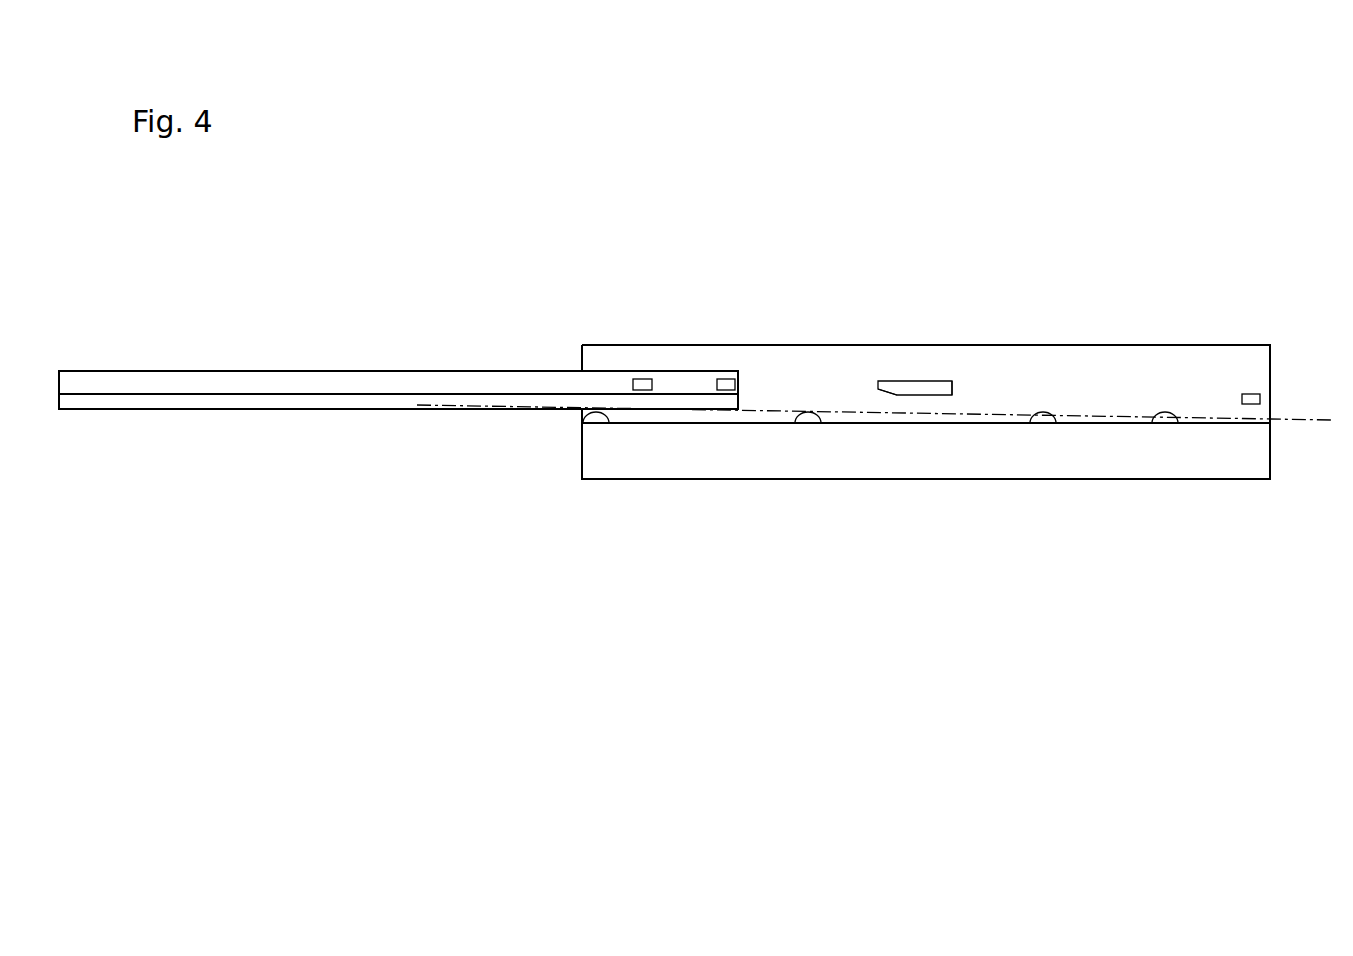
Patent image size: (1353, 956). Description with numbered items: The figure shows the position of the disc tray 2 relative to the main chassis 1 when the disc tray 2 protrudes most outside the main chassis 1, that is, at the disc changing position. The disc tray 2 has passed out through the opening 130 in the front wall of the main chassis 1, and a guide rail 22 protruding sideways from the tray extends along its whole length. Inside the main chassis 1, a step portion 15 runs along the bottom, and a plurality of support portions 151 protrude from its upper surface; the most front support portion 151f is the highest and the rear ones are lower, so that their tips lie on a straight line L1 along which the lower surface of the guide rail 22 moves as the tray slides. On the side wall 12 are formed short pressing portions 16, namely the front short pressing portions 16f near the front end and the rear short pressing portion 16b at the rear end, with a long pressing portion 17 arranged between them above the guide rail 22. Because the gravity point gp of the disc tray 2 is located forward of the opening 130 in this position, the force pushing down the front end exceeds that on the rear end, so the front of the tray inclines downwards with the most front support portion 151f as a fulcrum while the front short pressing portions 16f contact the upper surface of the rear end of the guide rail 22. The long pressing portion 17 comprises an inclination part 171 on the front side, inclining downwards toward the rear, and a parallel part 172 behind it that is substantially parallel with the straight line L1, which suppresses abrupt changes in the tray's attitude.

The main chassis 1 is at (612, 355).
The disc tray 2 is at (248, 386).
The side wall 12 is at (788, 368).
The step portion 15 is at (989, 456).
The guide rail 22 is at (220, 411).
The opening 130 is at (582, 370).
The short pressing portion 16 is at (964, 338).
The front short pressing portion 16f is at (727, 383).
The rear short pressing portion 16b is at (1250, 394).
The long pressing portion 17 is at (923, 381).
The inclination part 171 is at (897, 395).
The parallel part 172 is at (933, 395).
The support portion 151 is at (807, 423).
The most front support portion 151f is at (597, 423).
The gravity point gp is at (393, 409).
The straight line L1 is at (1316, 422).